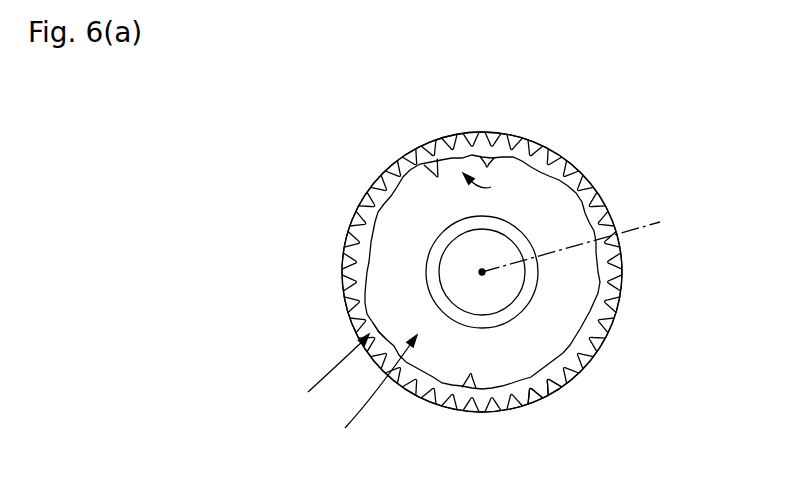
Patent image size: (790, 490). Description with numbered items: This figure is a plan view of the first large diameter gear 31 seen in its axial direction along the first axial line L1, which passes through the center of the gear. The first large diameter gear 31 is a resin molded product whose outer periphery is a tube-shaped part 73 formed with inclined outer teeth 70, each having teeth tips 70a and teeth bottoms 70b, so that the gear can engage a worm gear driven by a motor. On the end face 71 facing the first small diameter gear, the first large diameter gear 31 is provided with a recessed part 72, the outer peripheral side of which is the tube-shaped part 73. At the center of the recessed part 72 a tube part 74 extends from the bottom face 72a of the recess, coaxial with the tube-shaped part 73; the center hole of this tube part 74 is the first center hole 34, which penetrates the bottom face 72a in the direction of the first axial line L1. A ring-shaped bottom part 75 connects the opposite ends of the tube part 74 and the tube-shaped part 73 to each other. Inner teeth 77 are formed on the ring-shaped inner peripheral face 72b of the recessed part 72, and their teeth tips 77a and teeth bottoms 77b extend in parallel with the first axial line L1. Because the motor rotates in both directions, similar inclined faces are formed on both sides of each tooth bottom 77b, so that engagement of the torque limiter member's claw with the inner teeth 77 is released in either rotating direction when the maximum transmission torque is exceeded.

The first large diameter gear 31 is at (661, 165).
The first center hole 34 is at (456, 236).
The outer teeth 70 is at (606, 357).
The teeth tips 70a is at (541, 384).
The teeth bottoms 70b is at (533, 389).
The end face 71 is at (346, 266).
The recessed part 72 is at (528, 350).
The bottom face 72a is at (405, 315).
The inner peripheral face 72b is at (469, 373).
The tube-shaped part 73 is at (327, 376).
The tube part 74 is at (433, 252).
The bottom part 75 is at (371, 397).
The inner teeth 77 is at (491, 187).
The teeth tips 77a is at (434, 173).
The teeth bottoms 77b is at (491, 162).
The first axial line L1 is at (587, 242).